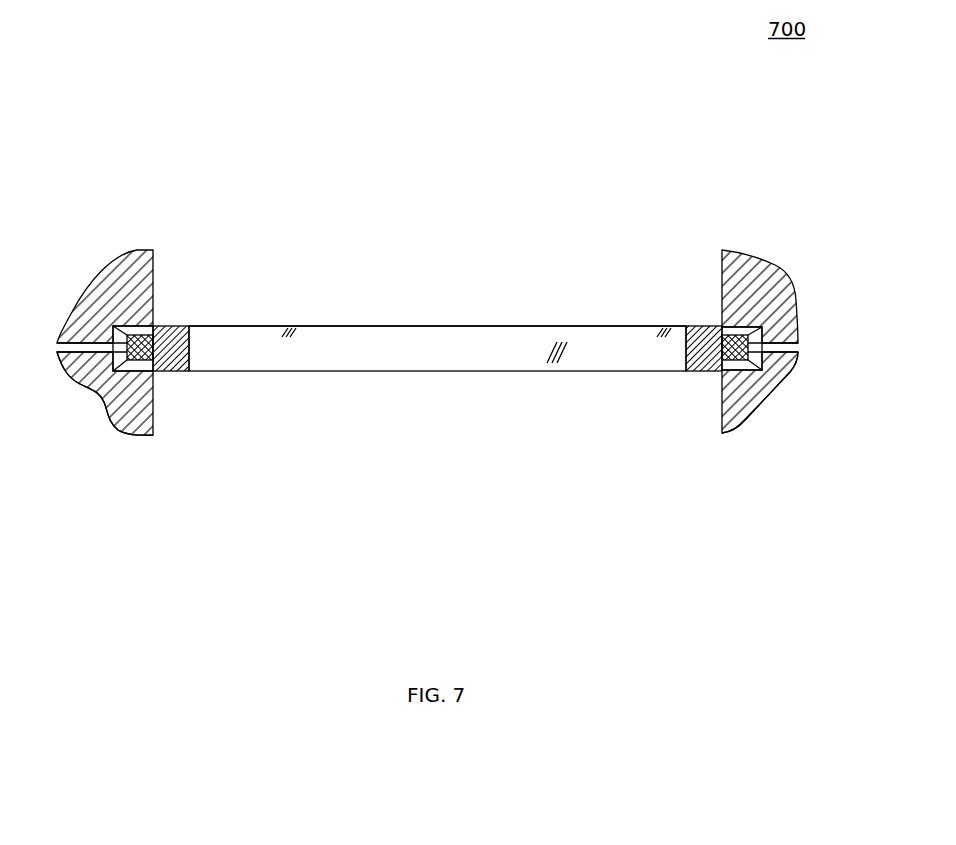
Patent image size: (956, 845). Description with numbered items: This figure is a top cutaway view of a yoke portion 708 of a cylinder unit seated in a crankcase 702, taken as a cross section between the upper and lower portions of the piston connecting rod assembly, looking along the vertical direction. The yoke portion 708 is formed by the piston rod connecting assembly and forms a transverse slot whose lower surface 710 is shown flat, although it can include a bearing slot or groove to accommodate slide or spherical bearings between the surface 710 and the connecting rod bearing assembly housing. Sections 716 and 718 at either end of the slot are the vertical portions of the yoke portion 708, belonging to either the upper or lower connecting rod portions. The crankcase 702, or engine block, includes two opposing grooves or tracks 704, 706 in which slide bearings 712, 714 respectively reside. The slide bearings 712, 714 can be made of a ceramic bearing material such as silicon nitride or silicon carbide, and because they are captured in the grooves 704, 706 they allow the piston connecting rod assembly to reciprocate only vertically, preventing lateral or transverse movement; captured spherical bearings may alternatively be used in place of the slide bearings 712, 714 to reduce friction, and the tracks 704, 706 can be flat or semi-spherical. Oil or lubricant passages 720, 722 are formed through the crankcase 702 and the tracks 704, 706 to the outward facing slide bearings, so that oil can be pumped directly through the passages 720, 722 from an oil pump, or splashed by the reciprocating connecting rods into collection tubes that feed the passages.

The crankcase 702 is at (137, 290).
The groove or track 704 is at (122, 333).
The groove or track 706 is at (758, 295).
The yoke portion 708 is at (260, 326).
The surface 710 is at (365, 345).
The slide bearing 712 is at (124, 372).
The slide bearing 714 is at (738, 372).
The section of yoke portion 716 is at (180, 371).
The section of yoke portion 718 is at (693, 325).
The oil or lubricant passage 720 is at (63, 358).
The oil or lubricant passage 722 is at (770, 358).